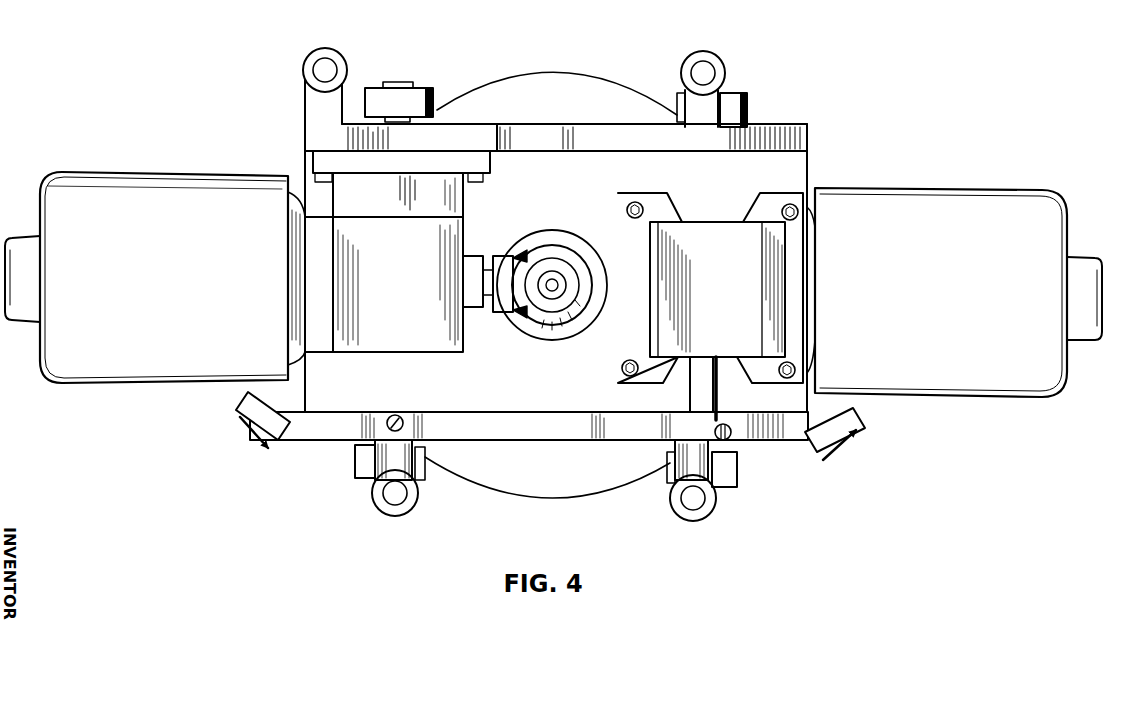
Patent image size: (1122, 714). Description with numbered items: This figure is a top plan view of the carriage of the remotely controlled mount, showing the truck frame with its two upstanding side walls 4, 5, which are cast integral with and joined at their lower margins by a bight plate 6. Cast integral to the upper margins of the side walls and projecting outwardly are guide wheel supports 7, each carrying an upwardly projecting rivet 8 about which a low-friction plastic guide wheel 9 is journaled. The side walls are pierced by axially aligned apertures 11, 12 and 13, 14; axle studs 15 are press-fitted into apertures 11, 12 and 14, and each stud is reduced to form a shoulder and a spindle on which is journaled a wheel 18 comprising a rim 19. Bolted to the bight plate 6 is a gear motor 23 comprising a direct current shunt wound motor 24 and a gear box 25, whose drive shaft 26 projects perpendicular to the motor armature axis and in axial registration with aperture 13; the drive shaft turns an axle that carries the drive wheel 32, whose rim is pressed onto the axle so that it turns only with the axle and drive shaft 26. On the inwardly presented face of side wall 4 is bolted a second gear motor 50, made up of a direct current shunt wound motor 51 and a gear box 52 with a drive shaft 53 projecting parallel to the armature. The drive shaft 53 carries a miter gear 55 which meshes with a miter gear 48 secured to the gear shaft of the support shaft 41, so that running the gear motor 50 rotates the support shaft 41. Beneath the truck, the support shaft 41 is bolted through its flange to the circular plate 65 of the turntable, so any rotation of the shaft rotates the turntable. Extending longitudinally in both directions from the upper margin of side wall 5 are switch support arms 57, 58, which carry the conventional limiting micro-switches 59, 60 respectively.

The side wall 4 is at (567, 128).
The side wall 5 is at (406, 285).
The bight plate 6 is at (400, 73).
The guide wheel support 7 is at (323, 34).
The rivet 8 is at (700, 400).
The guide wheel 9 is at (725, 70).
The aperture 11 is at (727, 127).
The aperture 12 is at (420, 122).
The aperture 13 is at (718, 446).
The aperture 14 is at (418, 440).
The axle stud 15 is at (399, 82).
The wheel 18 is at (355, 460).
The eye lug 19 is at (414, 508).
The gear motor 23 is at (890, 188).
The direct current shunt wound motor 24 is at (975, 190).
The gear box 25 is at (650, 342).
The drive shaft 26 is at (718, 402).
The drive wheel 32 is at (735, 487).
The support shaft 41 is at (554, 281).
The miter gear 48 is at (567, 320).
The gear motor 50 is at (137, 170).
The direct current shunt wound motor 51 is at (212, 176).
The gear box 52 is at (418, 353).
The drive shaft 53 is at (476, 285).
The miter gear 55 is at (503, 312).
The switch support arm 57 is at (790, 446).
The switch support arm 58 is at (327, 439).
The limiting switch 59 is at (865, 423).
The limiting switch 60 is at (238, 405).
The circular plate 65 is at (600, 79).